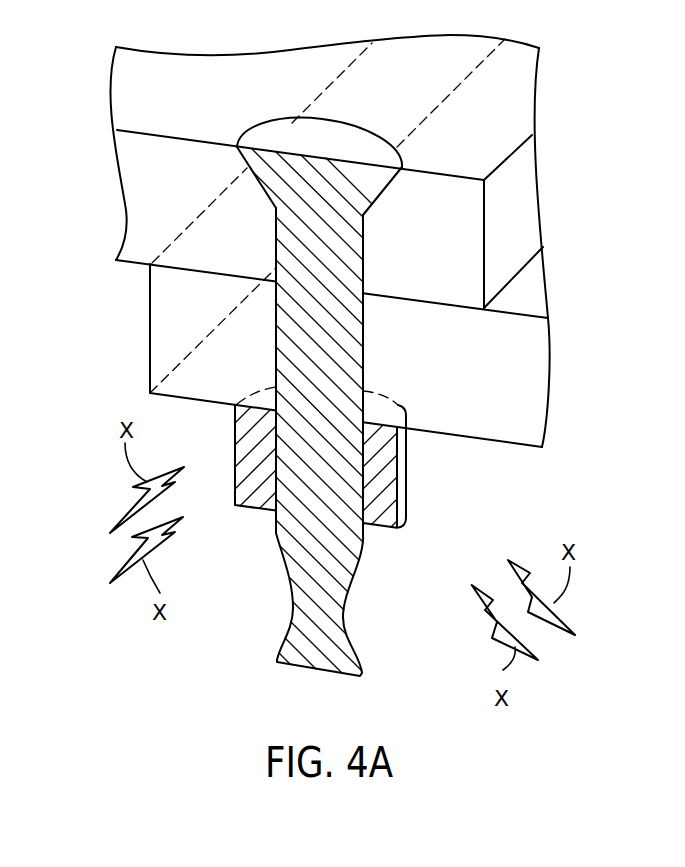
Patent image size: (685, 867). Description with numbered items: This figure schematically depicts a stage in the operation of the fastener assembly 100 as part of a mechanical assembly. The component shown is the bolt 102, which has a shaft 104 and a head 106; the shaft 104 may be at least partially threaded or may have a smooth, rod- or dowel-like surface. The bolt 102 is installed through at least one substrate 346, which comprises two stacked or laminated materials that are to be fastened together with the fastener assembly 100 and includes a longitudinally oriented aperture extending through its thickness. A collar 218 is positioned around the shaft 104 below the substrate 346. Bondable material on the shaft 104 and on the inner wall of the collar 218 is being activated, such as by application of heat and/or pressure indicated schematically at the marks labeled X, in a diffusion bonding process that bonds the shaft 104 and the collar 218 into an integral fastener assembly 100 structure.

The substrate 346 is at (562, 130).
The fastener assembly 100 is at (433, 465).
The head 106 is at (375, 122).
The shaft 104 is at (340, 362).
The bolt 102 is at (382, 570).
The collar 218 is at (250, 523).